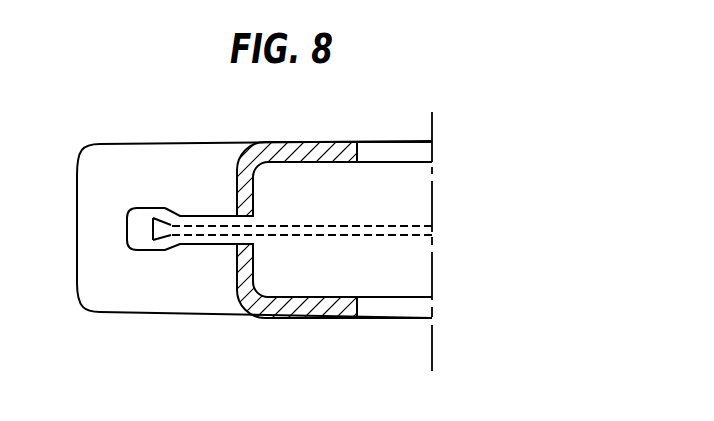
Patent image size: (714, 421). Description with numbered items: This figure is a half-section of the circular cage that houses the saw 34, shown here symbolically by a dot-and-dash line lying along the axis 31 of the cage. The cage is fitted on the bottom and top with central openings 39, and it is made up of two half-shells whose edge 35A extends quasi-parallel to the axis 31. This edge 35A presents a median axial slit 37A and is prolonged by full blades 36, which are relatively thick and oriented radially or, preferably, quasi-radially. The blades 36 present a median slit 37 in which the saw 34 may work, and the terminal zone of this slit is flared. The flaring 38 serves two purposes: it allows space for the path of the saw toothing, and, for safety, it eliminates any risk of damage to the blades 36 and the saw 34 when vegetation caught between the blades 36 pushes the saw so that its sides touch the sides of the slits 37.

The axis 31 is at (437, 363).
The saw 34 is at (417, 230).
The edge 35A is at (237, 188).
The blades 36 is at (113, 288).
The median slit 37 is at (223, 244).
The median axial slit 37A is at (250, 240).
The flaring 38 is at (162, 245).
The central openings 39 is at (417, 155).